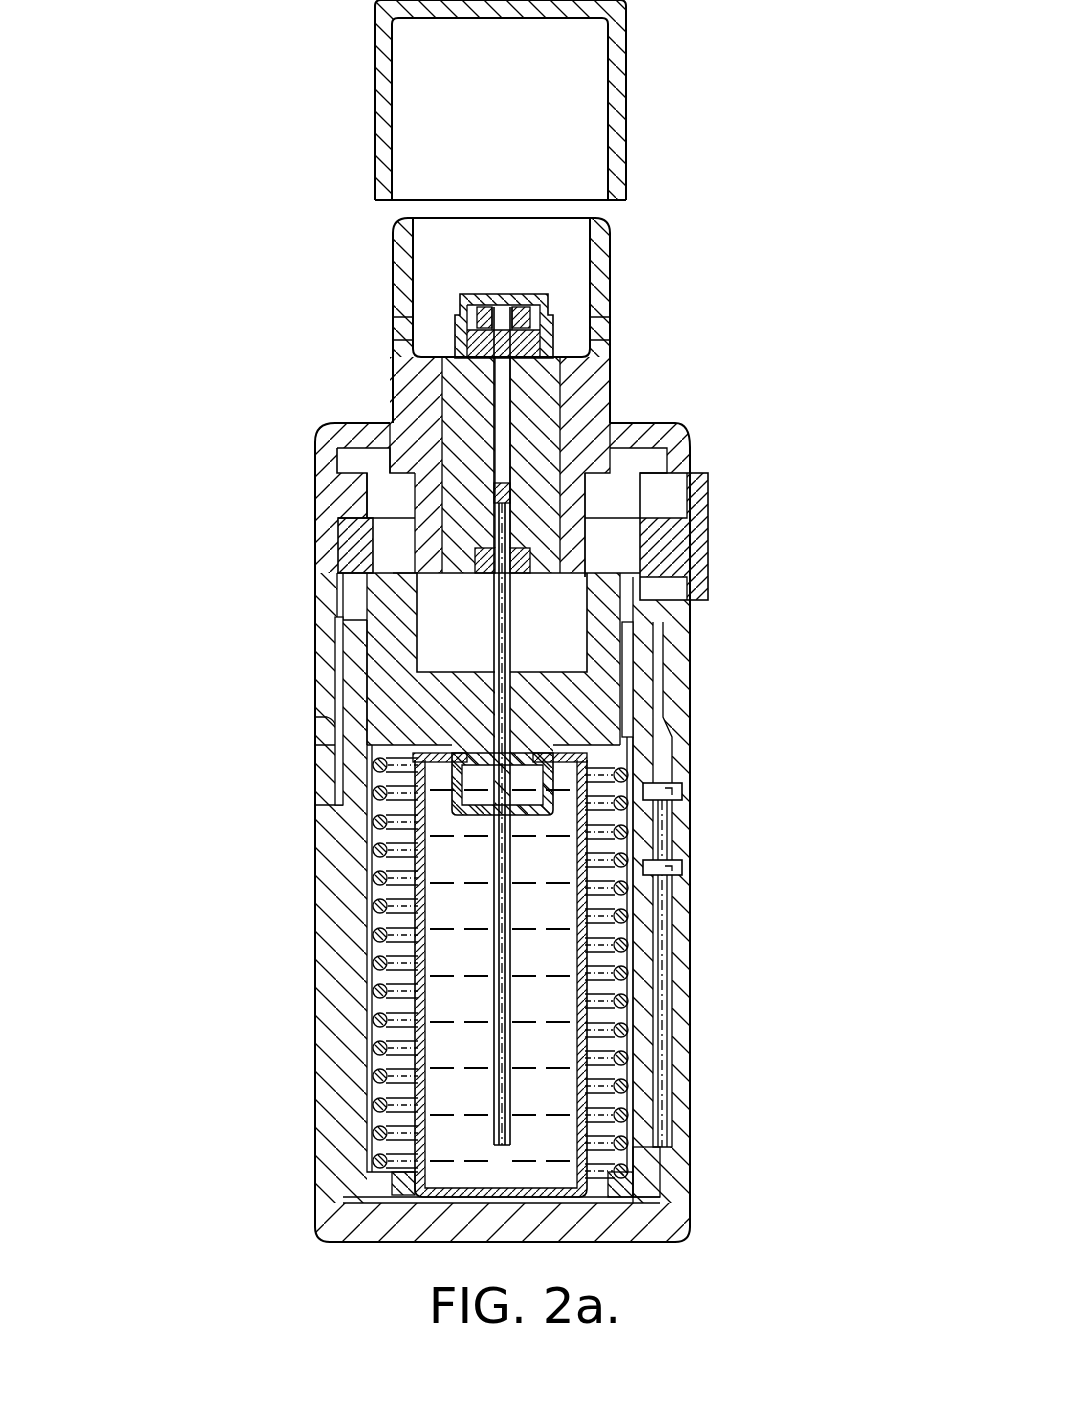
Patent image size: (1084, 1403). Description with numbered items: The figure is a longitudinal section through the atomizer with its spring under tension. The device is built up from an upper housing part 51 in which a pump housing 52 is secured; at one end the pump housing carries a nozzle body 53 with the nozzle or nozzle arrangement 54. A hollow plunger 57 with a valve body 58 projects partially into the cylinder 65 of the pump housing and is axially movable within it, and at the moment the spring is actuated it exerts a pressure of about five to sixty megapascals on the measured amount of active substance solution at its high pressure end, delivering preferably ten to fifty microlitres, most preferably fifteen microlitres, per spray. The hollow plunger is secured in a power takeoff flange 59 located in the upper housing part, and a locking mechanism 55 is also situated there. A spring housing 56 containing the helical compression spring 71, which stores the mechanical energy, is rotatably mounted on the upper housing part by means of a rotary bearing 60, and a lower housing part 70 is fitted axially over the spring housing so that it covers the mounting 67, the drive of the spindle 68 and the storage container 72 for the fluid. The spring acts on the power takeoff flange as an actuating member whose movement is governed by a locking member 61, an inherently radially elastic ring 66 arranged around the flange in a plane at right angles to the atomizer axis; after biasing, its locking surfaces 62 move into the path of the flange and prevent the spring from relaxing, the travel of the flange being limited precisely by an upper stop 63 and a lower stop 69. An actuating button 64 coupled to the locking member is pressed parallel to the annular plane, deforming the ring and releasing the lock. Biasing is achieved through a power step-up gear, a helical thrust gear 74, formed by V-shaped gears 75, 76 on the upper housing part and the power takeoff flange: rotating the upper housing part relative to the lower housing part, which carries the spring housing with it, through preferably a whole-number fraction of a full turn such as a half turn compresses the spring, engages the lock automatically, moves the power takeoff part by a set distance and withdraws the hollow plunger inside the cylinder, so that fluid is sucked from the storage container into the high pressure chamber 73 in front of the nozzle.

The pump head housing 51 is at (582, 372).
The central shoulder body 52 is at (541, 442).
The nozzle block 53 is at (547, 300).
The outlet channel 54 is at (490, 312).
The nozzle insert 55 is at (480, 347).
The piston 56 is at (398, 675).
The plunger rod 57 is at (497, 910).
The rod seal 58 is at (493, 497).
The seal ring 59 is at (527, 560).
The guide sleeve 60 is at (622, 728).
The piston seal lip 61 is at (393, 573).
The locking block 62 is at (345, 547).
The locking notch 63 is at (355, 485).
The actuating block 64 is at (708, 488).
The pump head body 65 is at (613, 240).
The cap 66 is at (615, 75).
The bottom plate 67 is at (643, 1185).
The bottom support block 68 is at (640, 1070).
The housing 69 is at (330, 722).
The housing bottom 70 is at (618, 1228).
The spring 71 is at (378, 875).
The container 72 is at (453, 1040).
The valve cup 73 is at (557, 760).
The vent tube 74 is at (665, 840).
The upper collar 75 is at (683, 793).
The lower collar 76 is at (683, 871).